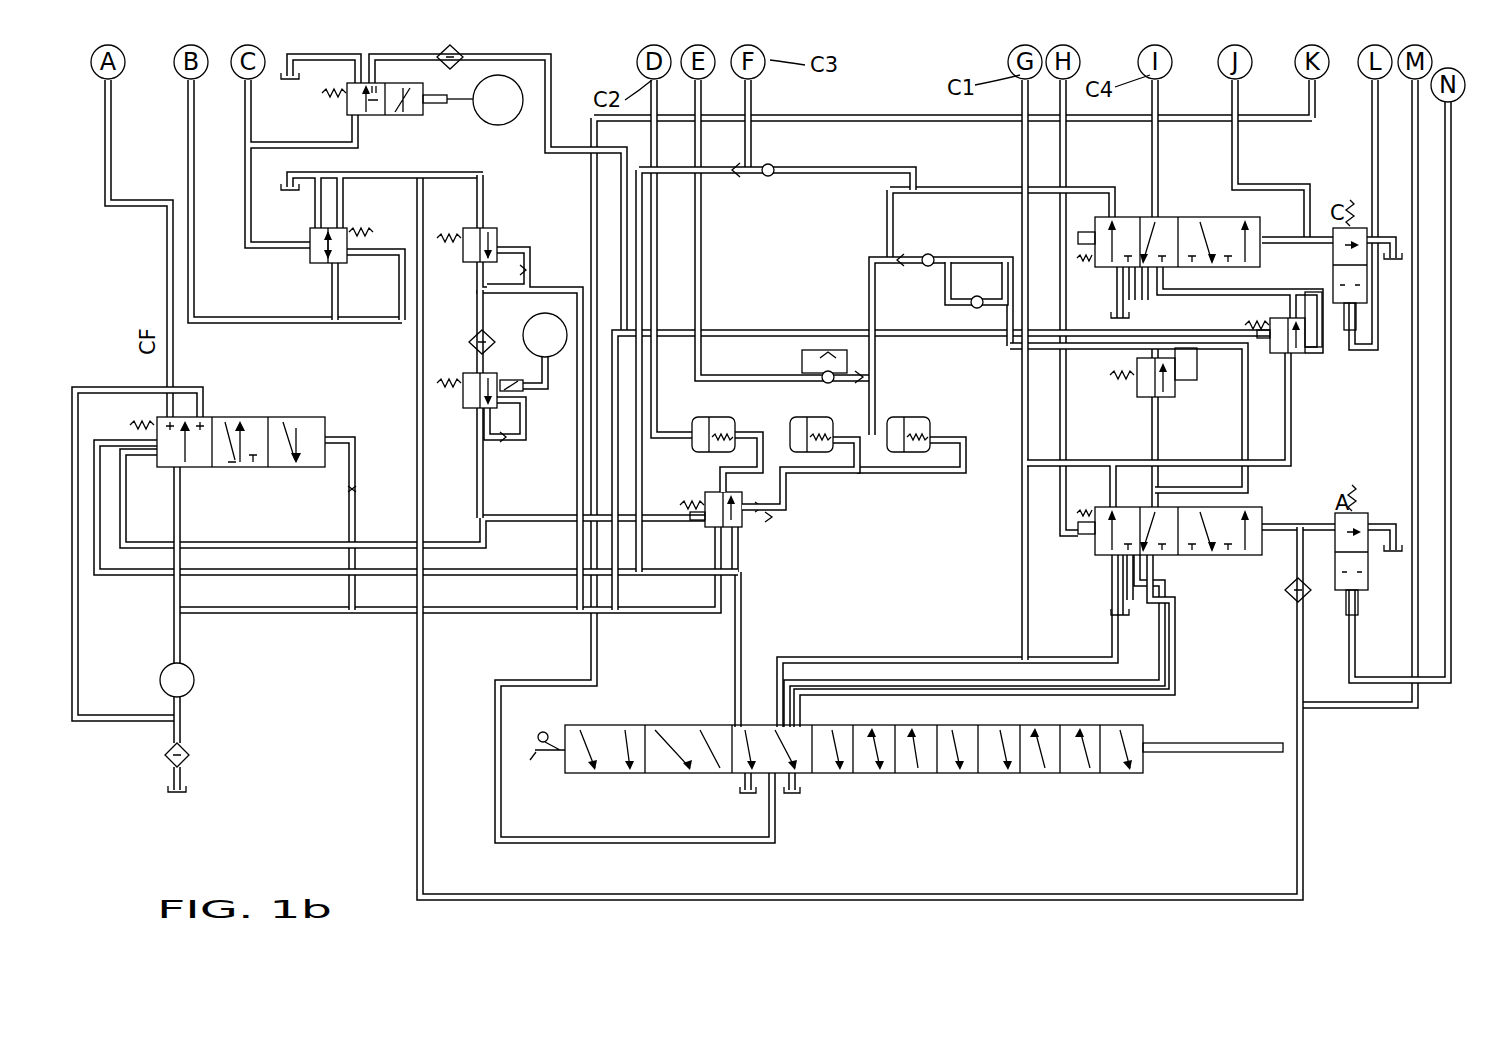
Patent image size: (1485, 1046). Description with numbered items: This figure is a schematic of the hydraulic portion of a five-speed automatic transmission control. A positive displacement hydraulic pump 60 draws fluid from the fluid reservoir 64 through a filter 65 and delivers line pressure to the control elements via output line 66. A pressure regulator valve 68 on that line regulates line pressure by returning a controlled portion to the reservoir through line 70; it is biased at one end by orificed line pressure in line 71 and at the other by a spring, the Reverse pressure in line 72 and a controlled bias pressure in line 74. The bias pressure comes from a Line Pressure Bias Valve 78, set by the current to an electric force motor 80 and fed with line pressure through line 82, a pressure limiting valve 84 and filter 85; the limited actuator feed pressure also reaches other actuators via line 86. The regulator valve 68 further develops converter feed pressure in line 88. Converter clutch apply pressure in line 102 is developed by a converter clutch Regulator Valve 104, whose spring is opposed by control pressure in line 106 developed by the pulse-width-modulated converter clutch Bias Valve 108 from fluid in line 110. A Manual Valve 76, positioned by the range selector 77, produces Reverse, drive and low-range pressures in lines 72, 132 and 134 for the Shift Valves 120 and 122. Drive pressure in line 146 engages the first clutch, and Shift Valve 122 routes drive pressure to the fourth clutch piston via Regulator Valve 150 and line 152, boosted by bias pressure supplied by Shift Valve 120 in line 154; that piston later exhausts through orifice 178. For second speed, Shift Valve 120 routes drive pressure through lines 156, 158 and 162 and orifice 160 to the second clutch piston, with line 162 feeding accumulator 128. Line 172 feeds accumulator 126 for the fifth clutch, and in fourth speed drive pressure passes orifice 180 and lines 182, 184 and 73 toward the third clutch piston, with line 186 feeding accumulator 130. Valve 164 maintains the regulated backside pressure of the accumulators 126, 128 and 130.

The positive displacement hydraulic pump 60 is at (195, 683).
The fluid reservoir 64 is at (185, 795).
The filter 65 is at (190, 757).
The output line 66 is at (303, 612).
The pressure regulator valve 68 is at (248, 468).
The line 70 is at (85, 624).
The line 71 is at (352, 443).
The line 72 is at (240, 570).
The line 73 is at (755, 90).
The line 74 is at (282, 545).
The Manual Valve 76 is at (932, 775).
The transmission range selector 77 is at (535, 765).
The Line Pressure Bias Valve 78 is at (470, 412).
The electric force motor 80 is at (525, 392).
The line 82 is at (420, 370).
The pressure limiting valve 84 is at (480, 270).
The filter 85 is at (470, 355).
The line 86 is at (418, 745).
The line 88 is at (168, 290).
The line 102 is at (189, 150).
The TCC Regulator Valve 104 is at (312, 265).
The line 106 is at (333, 142).
The TCC Bias Valve 108 is at (378, 120).
The line 110 is at (560, 100).
The Shift Valve 120 is at (1262, 505).
The Shift Valve 122 is at (1215, 215).
The accumulator 126 is at (722, 418).
The accumulator 128 is at (822, 455).
The accumulator 130 is at (915, 418).
The DR pressure supply line 132 is at (1292, 375).
The line 134 is at (985, 692).
The line 146 is at (1022, 133).
The Regulator Valve 150 is at (1305, 355).
The line 152 is at (1150, 188).
The line 154 is at (1243, 398).
The line 156 is at (1003, 400).
The line 158 is at (970, 395).
The orifice 160 is at (827, 350).
The line 162 is at (703, 258).
The valve 164 is at (745, 530).
The line 172 is at (660, 195).
The orifice 178 is at (1168, 288).
The orifice 180 is at (1068, 275).
The line 182 is at (947, 192).
The line 184 is at (815, 168).
The line 186 is at (878, 285).